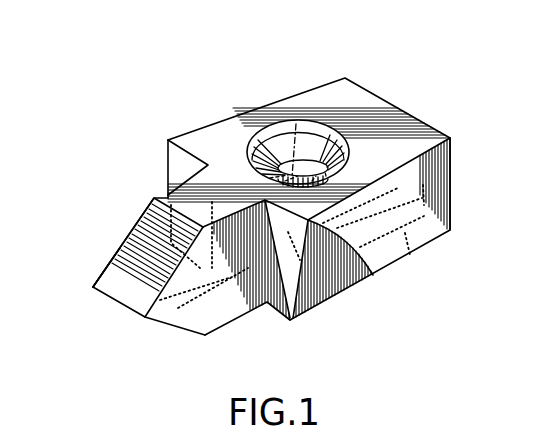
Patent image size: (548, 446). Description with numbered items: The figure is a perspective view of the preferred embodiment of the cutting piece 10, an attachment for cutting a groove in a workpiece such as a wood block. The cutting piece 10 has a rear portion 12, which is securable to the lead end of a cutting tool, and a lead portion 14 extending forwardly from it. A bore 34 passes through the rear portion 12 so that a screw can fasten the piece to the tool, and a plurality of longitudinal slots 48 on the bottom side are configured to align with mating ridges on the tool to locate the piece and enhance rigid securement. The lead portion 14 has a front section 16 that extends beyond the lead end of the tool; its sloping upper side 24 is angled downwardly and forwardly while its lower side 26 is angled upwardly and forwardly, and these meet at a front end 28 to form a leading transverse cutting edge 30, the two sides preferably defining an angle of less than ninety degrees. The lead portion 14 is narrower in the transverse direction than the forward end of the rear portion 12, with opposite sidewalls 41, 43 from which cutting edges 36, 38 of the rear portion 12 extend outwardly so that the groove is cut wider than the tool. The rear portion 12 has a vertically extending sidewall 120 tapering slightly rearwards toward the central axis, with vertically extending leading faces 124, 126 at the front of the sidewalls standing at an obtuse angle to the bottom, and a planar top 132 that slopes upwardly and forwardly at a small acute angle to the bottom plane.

The cutting piece 10 is at (440, 108).
The rear portion 12 is at (432, 131).
The lead portion 14 is at (154, 198).
The front section 16 is at (116, 252).
The upper side 24 is at (108, 266).
The lower side 26 is at (160, 322).
The front end 28 is at (146, 318).
The leading transverse cutting edge 30 is at (110, 299).
The bore 34 is at (302, 145).
The cutting edge 36 is at (178, 165).
The cutting edge 38 is at (373, 276).
The sidewall 41 is at (224, 312).
The sidewall 43 is at (139, 221).
The longitudinal slots 48 is at (405, 237).
The sidewall 120 is at (433, 194).
The leading face 124 is at (291, 322).
The leading face 126 is at (166, 152).
The top 132 is at (362, 103).